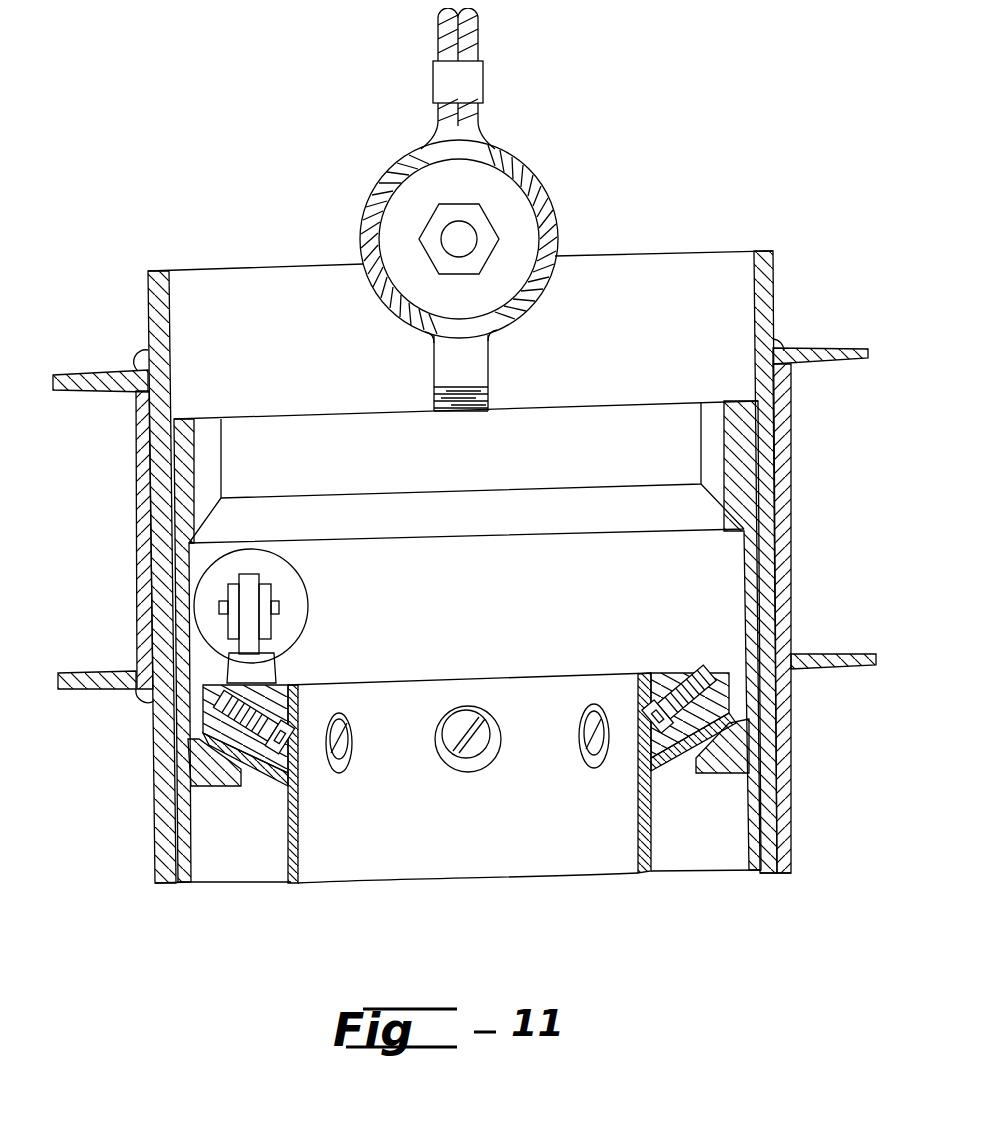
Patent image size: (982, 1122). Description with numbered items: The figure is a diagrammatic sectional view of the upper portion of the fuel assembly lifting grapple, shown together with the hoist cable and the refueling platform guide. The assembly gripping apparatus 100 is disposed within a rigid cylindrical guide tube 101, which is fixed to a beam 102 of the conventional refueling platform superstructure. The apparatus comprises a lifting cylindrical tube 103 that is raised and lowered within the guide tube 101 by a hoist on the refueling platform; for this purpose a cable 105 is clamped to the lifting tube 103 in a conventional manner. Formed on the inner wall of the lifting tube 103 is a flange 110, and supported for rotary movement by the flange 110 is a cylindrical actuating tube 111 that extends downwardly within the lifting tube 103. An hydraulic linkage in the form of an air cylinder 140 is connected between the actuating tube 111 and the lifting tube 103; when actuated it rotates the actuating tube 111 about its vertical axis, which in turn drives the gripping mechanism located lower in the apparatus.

The assembly gripping apparatus 100 is at (130, 306).
The guide tube 101 is at (773, 278).
The beam 102 is at (822, 346).
The lifting cylindrical tube 103 is at (180, 472).
The cable 105 is at (478, 44).
The flange 110 is at (218, 786).
The cylindrical actuating tube 111 is at (392, 680).
The air cylinder 140 is at (270, 627).